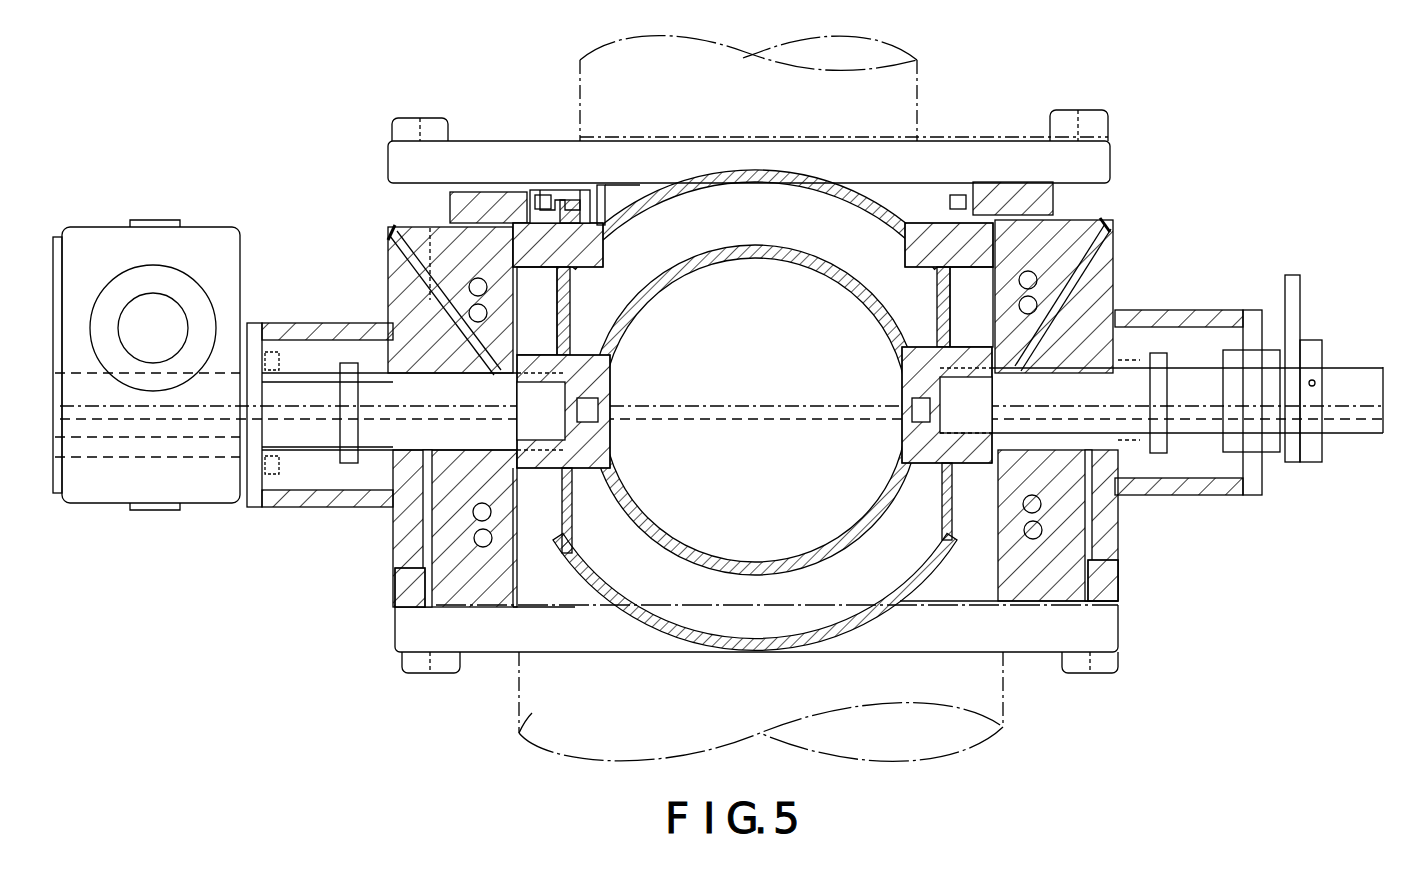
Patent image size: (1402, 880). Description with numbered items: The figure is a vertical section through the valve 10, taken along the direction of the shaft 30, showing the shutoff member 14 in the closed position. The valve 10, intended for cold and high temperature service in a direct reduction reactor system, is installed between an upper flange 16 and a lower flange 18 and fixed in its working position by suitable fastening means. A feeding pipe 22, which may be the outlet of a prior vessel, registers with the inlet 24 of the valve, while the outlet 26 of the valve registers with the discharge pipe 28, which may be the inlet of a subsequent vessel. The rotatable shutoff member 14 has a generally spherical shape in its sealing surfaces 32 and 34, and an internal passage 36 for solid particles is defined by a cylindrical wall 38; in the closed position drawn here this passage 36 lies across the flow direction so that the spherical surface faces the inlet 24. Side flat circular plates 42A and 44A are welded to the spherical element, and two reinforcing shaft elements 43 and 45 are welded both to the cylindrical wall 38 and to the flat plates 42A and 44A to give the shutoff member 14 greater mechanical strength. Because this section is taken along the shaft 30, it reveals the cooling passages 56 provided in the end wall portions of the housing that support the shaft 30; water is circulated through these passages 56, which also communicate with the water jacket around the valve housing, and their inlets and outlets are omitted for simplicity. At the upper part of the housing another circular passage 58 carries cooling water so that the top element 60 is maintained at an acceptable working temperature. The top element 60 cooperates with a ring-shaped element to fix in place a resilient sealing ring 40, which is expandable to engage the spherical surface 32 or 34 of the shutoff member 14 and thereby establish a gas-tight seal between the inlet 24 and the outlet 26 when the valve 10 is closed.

The valve 10 is at (1000, 62).
The shutoff member 14 is at (560, 523).
The upper flange 16 is at (398, 178).
The lower flange 18 is at (398, 628).
The feeding pipe 22 is at (598, 90).
The inlet 24 is at (618, 198).
The outlet 26 is at (565, 590).
The discharge pipe 28 is at (519, 733).
The shaft 30 is at (927, 465).
The sealing surface 32 is at (810, 180).
The sealing surface 34 is at (890, 605).
The internal passage 36 is at (807, 515).
The cylindrical wall 38 is at (755, 399).
The resilient sealing ring 40 is at (575, 210).
The side flat circular plate 42A is at (570, 535).
The reinforcing shaft element 43 is at (582, 355).
The side flat circular plate 44A is at (950, 500).
The reinforcing shaft element 45 is at (960, 350).
The cooling passages 56 is at (483, 538).
The circular passage 58 is at (545, 203).
The top element 60 is at (1005, 188).